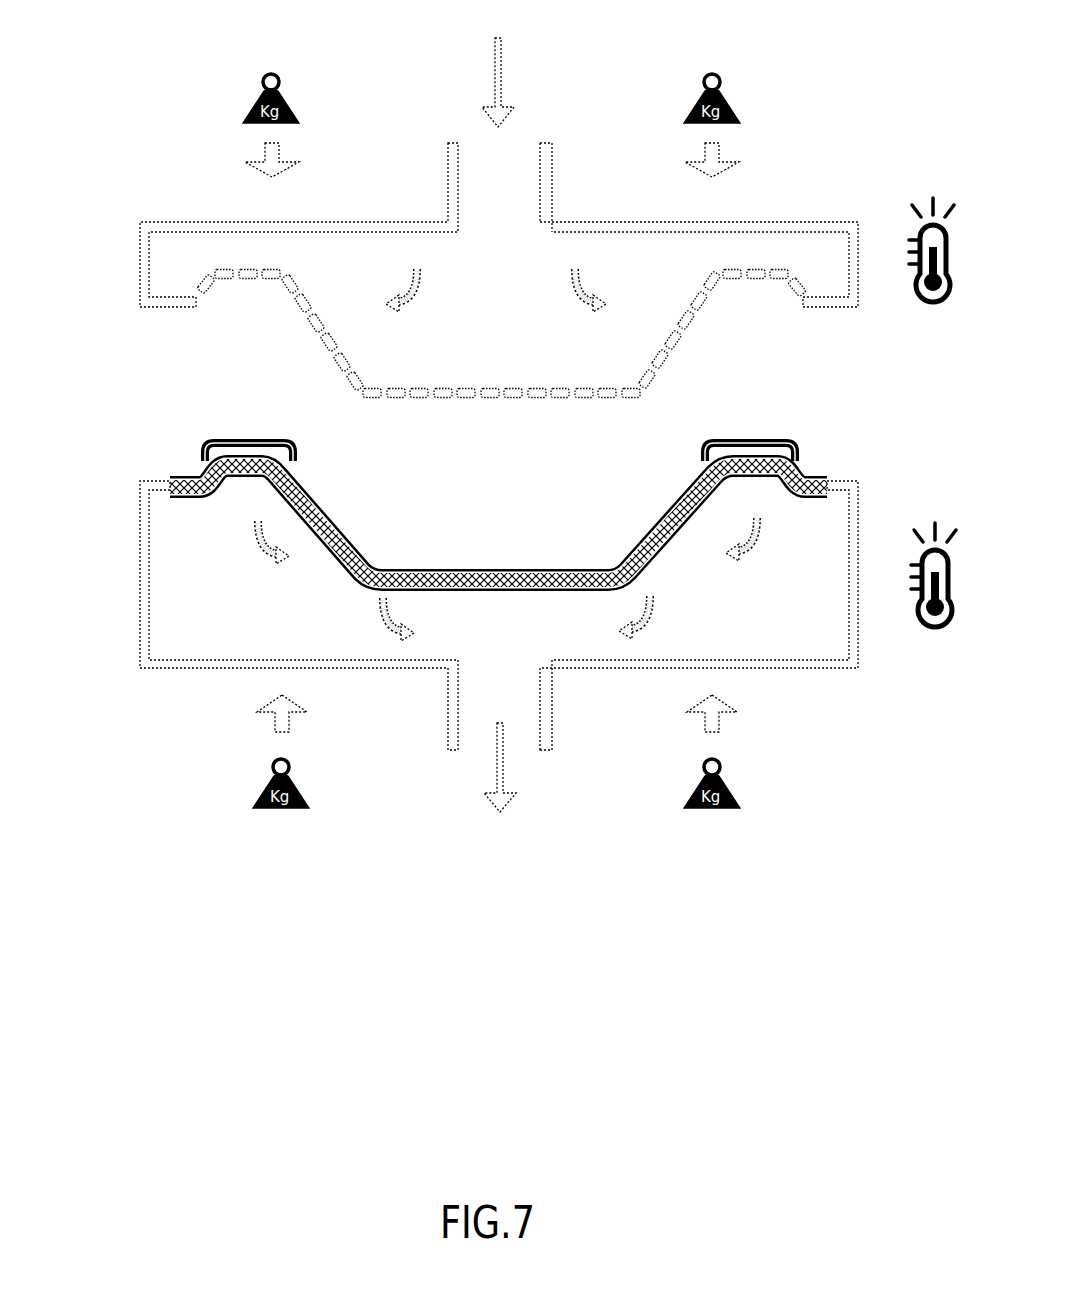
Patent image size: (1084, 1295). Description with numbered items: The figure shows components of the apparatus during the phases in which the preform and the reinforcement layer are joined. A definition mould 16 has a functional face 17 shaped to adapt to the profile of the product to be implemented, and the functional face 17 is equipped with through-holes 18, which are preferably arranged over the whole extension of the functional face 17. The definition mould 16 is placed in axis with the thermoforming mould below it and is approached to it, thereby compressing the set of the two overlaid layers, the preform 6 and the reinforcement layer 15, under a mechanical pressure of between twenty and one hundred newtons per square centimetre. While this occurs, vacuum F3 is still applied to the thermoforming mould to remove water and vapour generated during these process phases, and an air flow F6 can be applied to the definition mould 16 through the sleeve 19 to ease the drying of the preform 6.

The preform layer 6 is at (557, 567).
The reinforcement layer 15 is at (705, 450).
The definition mould 16 is at (139, 283).
The functional face 17 is at (712, 337).
The through-holes 18 is at (315, 359).
The sleeve 19 is at (552, 175).
The air flow F6 is at (517, 110).
The vacuum F3 is at (519, 767).